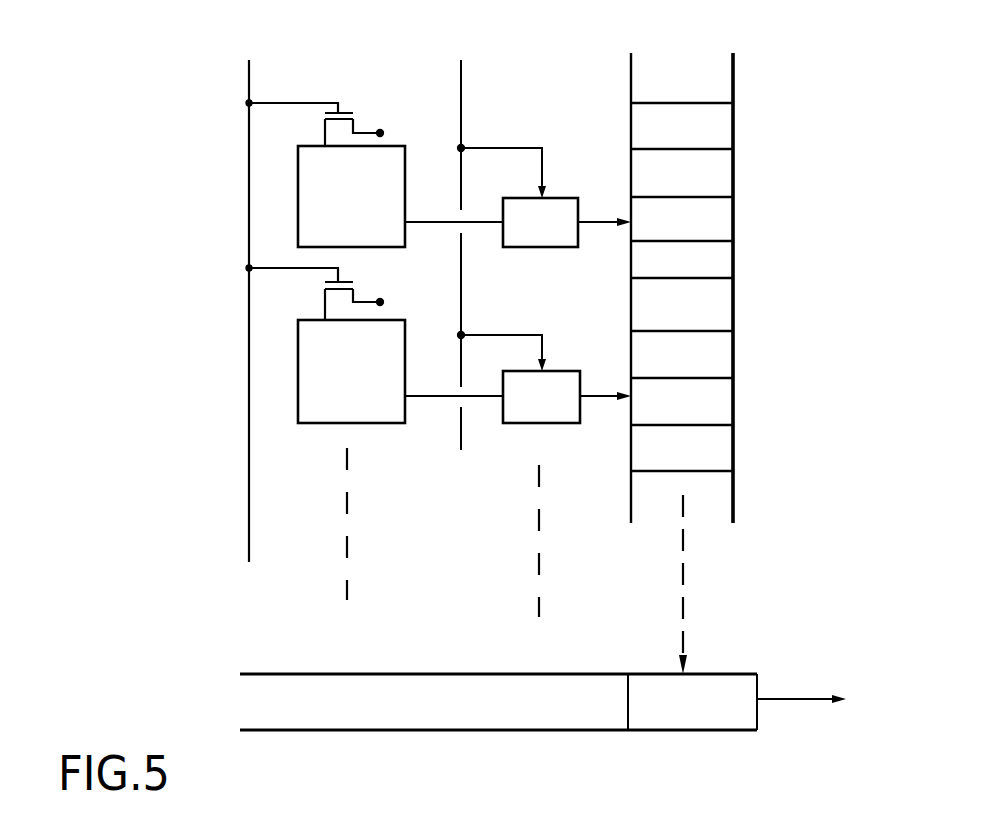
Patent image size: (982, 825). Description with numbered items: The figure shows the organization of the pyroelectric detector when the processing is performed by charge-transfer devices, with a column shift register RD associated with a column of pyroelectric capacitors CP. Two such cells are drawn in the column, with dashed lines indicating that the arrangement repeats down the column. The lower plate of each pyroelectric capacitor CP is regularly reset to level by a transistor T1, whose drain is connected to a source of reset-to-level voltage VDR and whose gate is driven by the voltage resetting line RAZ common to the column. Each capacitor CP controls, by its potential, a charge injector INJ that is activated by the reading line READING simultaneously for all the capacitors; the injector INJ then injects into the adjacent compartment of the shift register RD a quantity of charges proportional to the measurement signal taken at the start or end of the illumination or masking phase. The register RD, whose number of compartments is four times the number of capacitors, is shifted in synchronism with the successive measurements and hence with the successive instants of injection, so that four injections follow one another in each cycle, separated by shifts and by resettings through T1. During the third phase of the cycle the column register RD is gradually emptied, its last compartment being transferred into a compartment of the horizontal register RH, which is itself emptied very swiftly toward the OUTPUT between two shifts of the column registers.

The voltage resetting line RAZ is at (274, 301).
The reading control line READING is at (508, 249).
The reset transistor T1 is at (341, 107).
The reset-to-level voltage source VDR is at (405, 207).
The pyroelectric capacitor CP is at (298, 201).
The charge injector INJ is at (537, 247).
The shift register RD is at (734, 132).
The horizontal register RH is at (533, 730).
The output OUTPUT is at (815, 688).